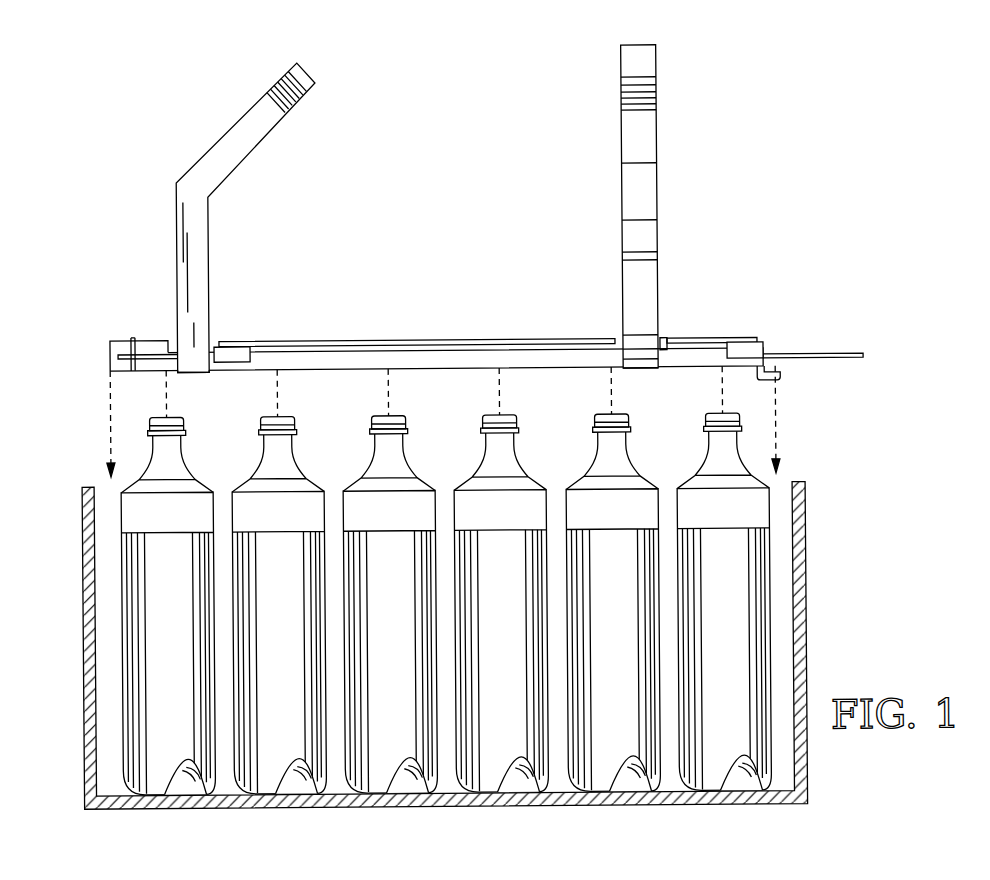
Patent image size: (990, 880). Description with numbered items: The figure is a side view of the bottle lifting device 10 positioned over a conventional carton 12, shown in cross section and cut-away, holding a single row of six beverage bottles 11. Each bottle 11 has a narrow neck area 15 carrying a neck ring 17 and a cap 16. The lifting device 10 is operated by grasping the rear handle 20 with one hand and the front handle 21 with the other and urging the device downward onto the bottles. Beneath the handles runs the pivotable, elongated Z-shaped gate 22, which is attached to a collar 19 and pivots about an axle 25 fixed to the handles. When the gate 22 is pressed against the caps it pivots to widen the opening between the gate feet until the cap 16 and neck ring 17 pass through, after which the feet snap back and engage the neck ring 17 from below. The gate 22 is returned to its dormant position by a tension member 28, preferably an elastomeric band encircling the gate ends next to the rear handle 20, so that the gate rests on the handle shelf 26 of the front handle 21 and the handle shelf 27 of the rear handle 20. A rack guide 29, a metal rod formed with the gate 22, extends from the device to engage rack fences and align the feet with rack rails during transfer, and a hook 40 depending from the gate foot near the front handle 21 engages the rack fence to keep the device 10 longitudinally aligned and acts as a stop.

The bottle lifting device 10 is at (756, 140).
The beverage bottle 11 is at (446, 641).
The carton 12 is at (819, 527).
The neck area 15 is at (353, 453).
The cap 16 is at (262, 420).
The neck ring 17 is at (371, 430).
The collar 19 is at (218, 345).
The rear handle 20 is at (321, 65).
The front handle 21 is at (614, 67).
The Z-shaped gate 22 is at (112, 338).
The axle 25 is at (664, 343).
The handle shelf 26 is at (644, 369).
The handle shelf 27 is at (182, 371).
The tension member 28 is at (133, 337).
The rack guide 29 is at (810, 357).
The hook 40 is at (782, 380).